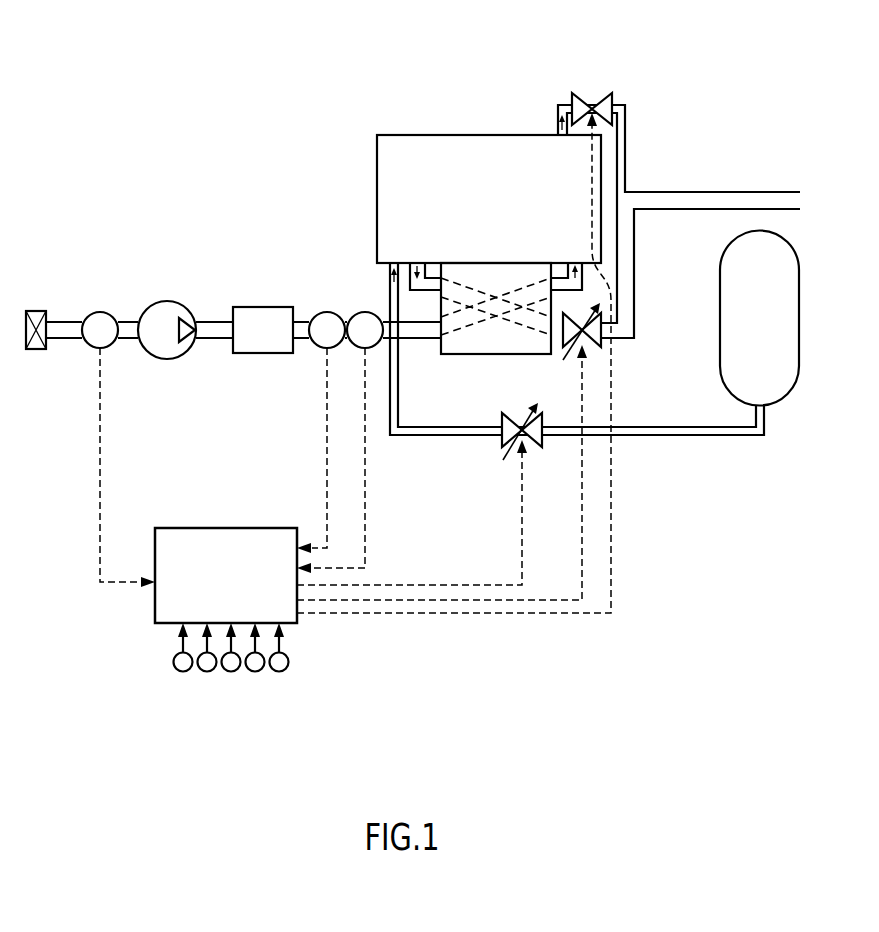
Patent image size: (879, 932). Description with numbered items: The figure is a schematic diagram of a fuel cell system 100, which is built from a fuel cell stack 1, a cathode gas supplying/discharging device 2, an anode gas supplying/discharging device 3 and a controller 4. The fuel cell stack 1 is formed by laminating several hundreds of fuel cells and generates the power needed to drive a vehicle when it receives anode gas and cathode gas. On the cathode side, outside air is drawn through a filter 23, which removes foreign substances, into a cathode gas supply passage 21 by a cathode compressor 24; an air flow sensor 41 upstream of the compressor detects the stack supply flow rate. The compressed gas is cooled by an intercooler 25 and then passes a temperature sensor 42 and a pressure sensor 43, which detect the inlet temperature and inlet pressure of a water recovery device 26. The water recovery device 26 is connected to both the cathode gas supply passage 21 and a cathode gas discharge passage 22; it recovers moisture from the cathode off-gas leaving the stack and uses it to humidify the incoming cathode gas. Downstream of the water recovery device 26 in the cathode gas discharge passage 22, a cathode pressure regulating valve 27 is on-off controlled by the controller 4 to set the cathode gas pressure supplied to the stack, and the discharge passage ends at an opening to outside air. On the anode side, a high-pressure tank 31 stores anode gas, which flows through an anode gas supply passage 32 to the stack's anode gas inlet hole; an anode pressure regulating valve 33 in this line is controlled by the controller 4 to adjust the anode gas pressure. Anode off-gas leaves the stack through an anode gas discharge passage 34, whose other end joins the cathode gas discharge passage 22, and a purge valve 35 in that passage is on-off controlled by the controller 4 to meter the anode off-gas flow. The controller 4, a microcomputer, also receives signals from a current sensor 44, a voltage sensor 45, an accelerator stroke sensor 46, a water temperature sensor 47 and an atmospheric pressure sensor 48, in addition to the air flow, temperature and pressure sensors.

The fuel cell system 100 is at (178, 78).
The fuel cell stack 1 is at (421, 133).
The cathode gas supplying/discharging device 2 is at (168, 254).
The anode gas supplying/discharging device 3 is at (635, 452).
The controller 4 is at (240, 527).
The cathode gas supply passage 21 is at (66, 340).
The cathode gas discharge passage 22 is at (657, 210).
The filter 23 is at (36, 349).
The cathode compressor 24 is at (176, 302).
The intercooler 25 is at (265, 307).
The water recovery device (WRD) 26 is at (490, 355).
The cathode pressure regulating valve 27 is at (591, 350).
The high-pressure tank 31 is at (720, 318).
The anode gas supply passage 32 is at (726, 437).
The anode pressure regulating valve 33 is at (502, 441).
The anode gas discharge passage 34 is at (626, 118).
The purge valve 35 is at (596, 94).
The air flow sensor 41 is at (100, 311).
The temperature sensor 42 is at (327, 312).
The pressure sensor 43 is at (365, 312).
The current sensor 44 is at (183, 672).
The voltage sensor 45 is at (207, 672).
The accelerator stroke sensor 46 is at (231, 672).
The water temperature sensor 47 is at (255, 672).
The atmospheric pressure sensor 48 is at (279, 672).